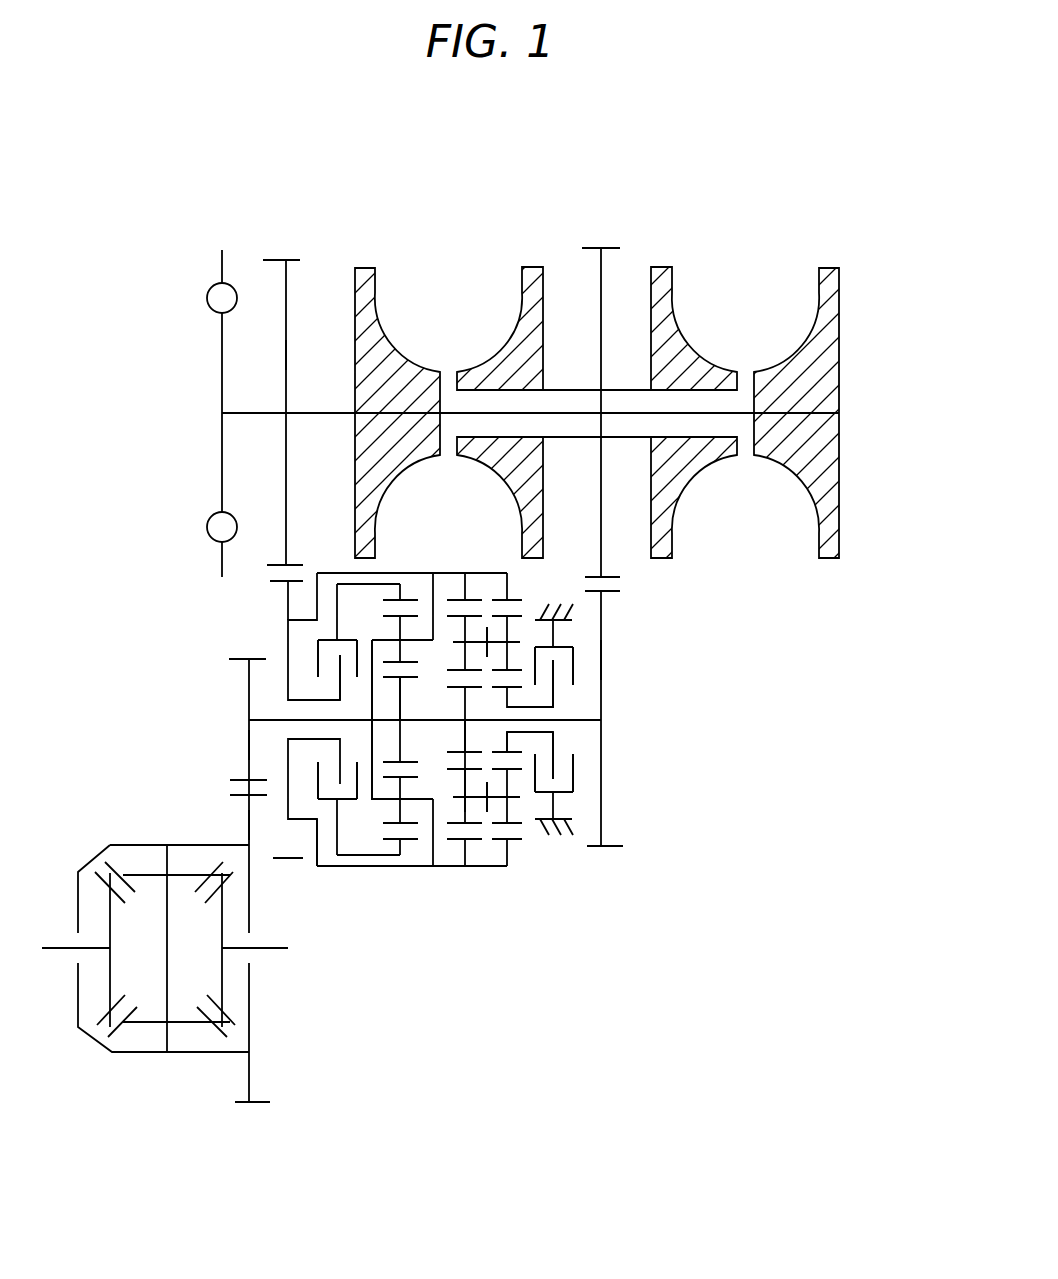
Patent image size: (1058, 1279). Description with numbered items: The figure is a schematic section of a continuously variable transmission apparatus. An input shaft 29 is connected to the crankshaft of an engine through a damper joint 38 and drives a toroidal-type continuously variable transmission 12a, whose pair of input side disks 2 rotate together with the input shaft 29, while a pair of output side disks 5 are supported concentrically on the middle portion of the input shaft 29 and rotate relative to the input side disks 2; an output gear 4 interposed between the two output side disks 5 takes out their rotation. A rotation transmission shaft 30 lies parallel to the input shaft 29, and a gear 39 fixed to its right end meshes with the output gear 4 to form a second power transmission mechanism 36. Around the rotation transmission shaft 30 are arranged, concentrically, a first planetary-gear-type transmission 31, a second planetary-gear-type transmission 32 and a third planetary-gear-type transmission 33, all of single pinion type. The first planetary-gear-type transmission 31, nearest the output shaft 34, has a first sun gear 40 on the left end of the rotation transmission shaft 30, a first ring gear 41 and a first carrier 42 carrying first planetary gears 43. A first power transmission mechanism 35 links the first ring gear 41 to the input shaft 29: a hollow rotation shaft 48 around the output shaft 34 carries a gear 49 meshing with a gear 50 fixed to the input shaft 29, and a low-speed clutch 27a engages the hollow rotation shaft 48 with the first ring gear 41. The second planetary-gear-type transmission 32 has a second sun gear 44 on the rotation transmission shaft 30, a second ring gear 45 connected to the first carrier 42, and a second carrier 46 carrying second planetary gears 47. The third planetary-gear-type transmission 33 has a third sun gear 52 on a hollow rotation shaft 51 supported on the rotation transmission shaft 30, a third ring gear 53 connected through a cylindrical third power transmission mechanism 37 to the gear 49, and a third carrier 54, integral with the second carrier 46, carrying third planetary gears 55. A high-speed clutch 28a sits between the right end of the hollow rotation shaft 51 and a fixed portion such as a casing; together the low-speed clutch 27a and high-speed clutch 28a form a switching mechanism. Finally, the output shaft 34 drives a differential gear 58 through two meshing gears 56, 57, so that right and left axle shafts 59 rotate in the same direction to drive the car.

The input side disk 2 is at (373, 333).
The output gear 4 is at (601, 248).
The output side disk 5 is at (533, 285).
The toroidal-type continuously variable transmission 12a is at (487, 272).
The input shaft 29 is at (328, 413).
The rotation transmission shaft 30 is at (600, 721).
The first planetary-gear-type transmission 31 is at (433, 985).
The second planetary-gear-type transmission 32 is at (483, 990).
The third planetary-gear-type transmission 33 is at (585, 945).
The output shaft 34 is at (280, 720).
The first power transmission mechanism 35 is at (285, 601).
The second power transmission mechanism 36 is at (606, 613).
The third power transmission mechanism 37 is at (387, 868).
The damper joint 38 is at (207, 298).
The gear 39 is at (601, 660).
The first sun gear 40 is at (403, 702).
The first ring gear 41 is at (382, 866).
The first carrier 42 is at (372, 790).
The first planetary gear 43 is at (403, 627).
The second sun gear 44 is at (465, 735).
The second ring gear 45 is at (472, 855).
The second carrier 46 is at (477, 845).
The second planetary gear 47 is at (465, 617).
The hollow rotation shaft 48 is at (288, 697).
The gear 49 is at (318, 765).
The gear 50 is at (286, 355).
The hollow rotation shaft 51 is at (540, 700).
The third sun gear 52 is at (510, 742).
The third ring gear 53 is at (515, 853).
The third carrier 54 is at (497, 628).
The third planetary gear 55 is at (505, 642).
The gear 56 is at (249, 745).
The gear 57 is at (249, 823).
The differential gear 58 is at (147, 1023).
The axle shaft 59 is at (56, 948).
The low-speed clutch 27a is at (318, 653).
The high-speed clutch 28a is at (573, 763).